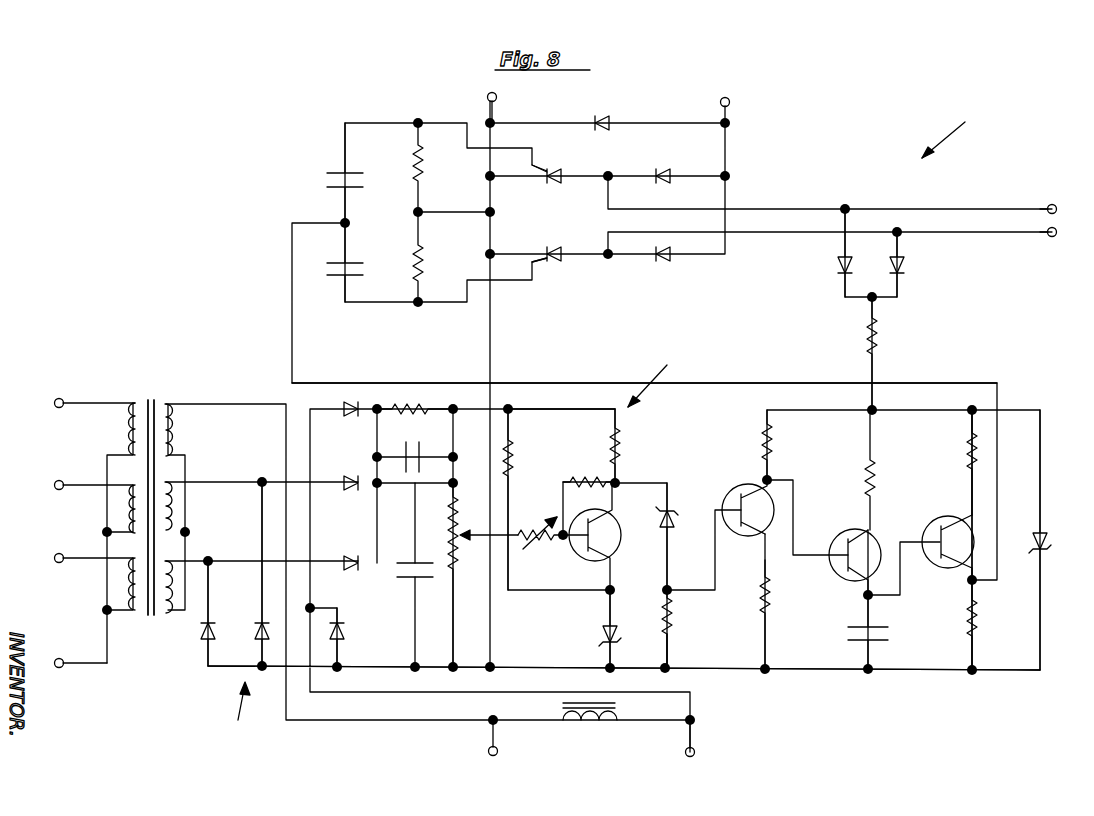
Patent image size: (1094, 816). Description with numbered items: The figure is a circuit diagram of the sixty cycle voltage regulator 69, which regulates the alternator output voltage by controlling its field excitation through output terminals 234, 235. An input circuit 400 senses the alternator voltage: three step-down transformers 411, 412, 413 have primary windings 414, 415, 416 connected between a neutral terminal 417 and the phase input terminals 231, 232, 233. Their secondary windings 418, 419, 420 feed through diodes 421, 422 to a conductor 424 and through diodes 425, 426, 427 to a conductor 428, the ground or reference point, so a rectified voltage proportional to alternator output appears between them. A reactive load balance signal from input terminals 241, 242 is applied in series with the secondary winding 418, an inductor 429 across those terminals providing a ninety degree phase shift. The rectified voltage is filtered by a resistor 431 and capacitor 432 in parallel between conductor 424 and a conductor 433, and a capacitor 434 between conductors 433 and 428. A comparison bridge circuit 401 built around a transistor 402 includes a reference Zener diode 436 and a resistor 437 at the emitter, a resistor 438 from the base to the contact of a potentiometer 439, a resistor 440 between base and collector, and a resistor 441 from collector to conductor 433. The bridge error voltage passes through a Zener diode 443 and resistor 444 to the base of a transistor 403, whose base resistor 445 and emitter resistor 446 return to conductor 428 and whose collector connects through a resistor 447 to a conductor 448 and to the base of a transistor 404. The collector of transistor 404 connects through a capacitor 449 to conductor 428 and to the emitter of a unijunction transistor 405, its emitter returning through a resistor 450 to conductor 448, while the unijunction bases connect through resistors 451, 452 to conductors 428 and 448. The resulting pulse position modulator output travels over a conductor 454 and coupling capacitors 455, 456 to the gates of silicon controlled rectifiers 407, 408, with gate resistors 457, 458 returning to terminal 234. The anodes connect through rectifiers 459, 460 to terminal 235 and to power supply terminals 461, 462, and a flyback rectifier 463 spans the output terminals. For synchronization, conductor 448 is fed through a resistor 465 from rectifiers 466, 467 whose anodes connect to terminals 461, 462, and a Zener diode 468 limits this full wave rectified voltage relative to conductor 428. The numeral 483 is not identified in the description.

The voltage regulator 69 is at (957, 126).
The input terminal 231 is at (56, 407).
The input terminal 232 is at (55, 486).
The input terminal 233 is at (58, 554).
The output terminal 234 is at (494, 94).
The output terminal 235 is at (729, 100).
The input terminal 241 is at (496, 755).
The input terminal 242 is at (693, 756).
The input circuit 400 is at (236, 719).
The bridge circuit 401 is at (663, 382).
The transistor 402 is at (606, 520).
The transistor 403 is at (742, 482).
The transistor 404 is at (840, 540).
The unijunction transistor 405 is at (948, 516).
The silicon controlled rectifier 407 is at (556, 170).
The silicon controlled rectifier 408 is at (550, 246).
The step-down transformer 411 is at (158, 402).
The step-down transformer 412 is at (172, 480).
The step-down transformer 413 is at (155, 618).
The primary winding 414 is at (128, 435).
The primary winding 415 is at (128, 520).
The primary winding 416 is at (128, 598).
The terminal 417 is at (60, 668).
The secondary winding 418 is at (172, 430).
The secondary winding 419 is at (172, 505).
The secondary winding 420 is at (172, 568).
The diode 421 is at (351, 420).
The diode 422 is at (352, 494).
The conductor 424 is at (378, 525).
The diode 425 is at (346, 630).
The diode 426 is at (256, 620).
The diode 427 is at (200, 640).
The conductor 428 is at (386, 670).
The inductor 429 is at (586, 728).
The resistor 431 is at (403, 404).
The capacitor 432 is at (422, 440).
The conductor 433 is at (348, 573).
The capacitor 434 is at (398, 570).
The Zener diode 436 is at (603, 632).
The resistor 437 is at (514, 460).
The resistor 438 is at (537, 525).
The potentiometer 439 is at (452, 534).
The resistor 440 is at (581, 470).
The resistor 441 is at (622, 455).
The Zener diode 443 is at (676, 516).
The resistor 444 is at (672, 600).
The resistor 445 is at (672, 634).
The resistor 446 is at (772, 598).
The resistor 447 is at (775, 448).
The conductor 448 is at (905, 432).
The capacitor 449 is at (885, 647).
The resistor 450 is at (876, 478).
The resistor 451 is at (978, 625).
The resistor 452 is at (980, 445).
The conductor 454 is at (635, 362).
The coupling capacitor 455 is at (330, 178).
The coupling capacitor 456 is at (355, 262).
The resistor 457 is at (423, 165).
The resistor 458 is at (423, 265).
The rectifier 459 is at (660, 172).
The rectifier 460 is at (660, 264).
The power supply terminal 461 is at (1062, 190).
The power supply terminal 462 is at (1052, 237).
The flyback rectifier 463 is at (603, 116).
The resistor 465 is at (880, 336).
The rectifier 466 is at (838, 268).
The rectifier 467 is at (904, 265).
The Zener diode 468 is at (1046, 553).
The conductor 483 is at (553, 409).